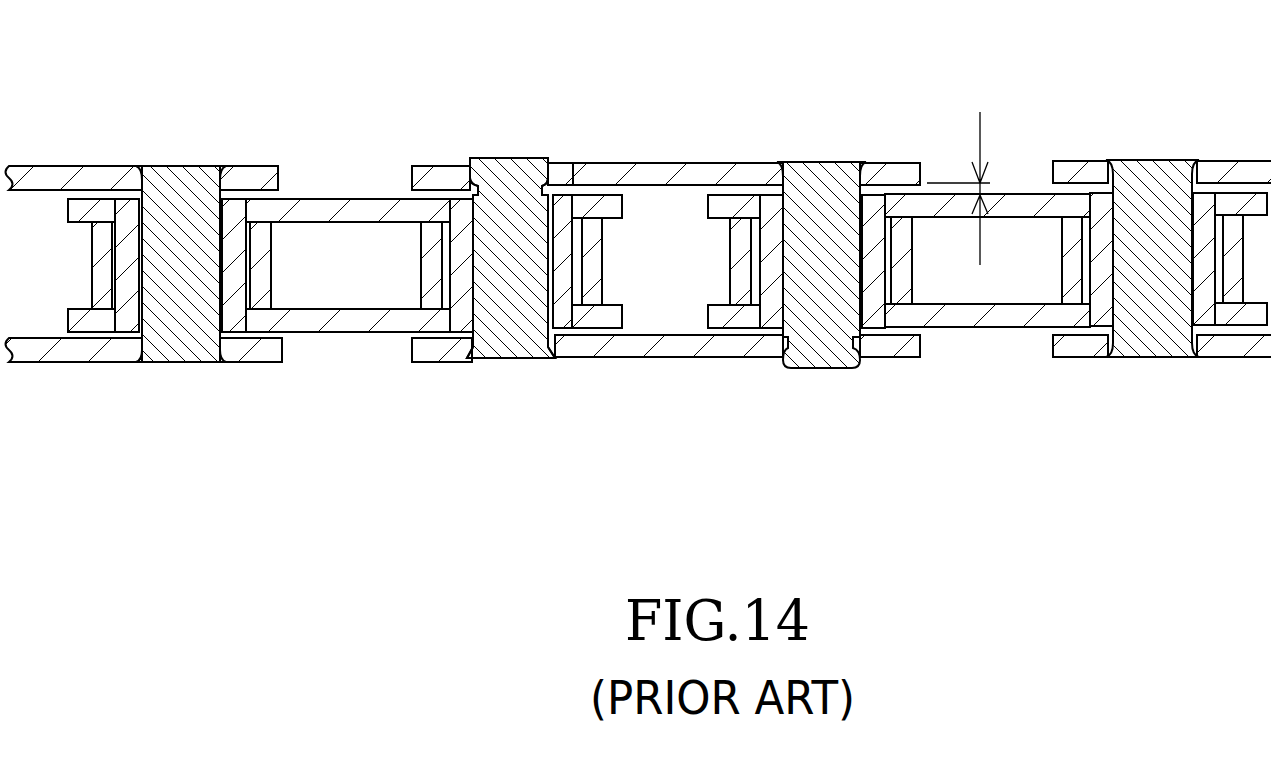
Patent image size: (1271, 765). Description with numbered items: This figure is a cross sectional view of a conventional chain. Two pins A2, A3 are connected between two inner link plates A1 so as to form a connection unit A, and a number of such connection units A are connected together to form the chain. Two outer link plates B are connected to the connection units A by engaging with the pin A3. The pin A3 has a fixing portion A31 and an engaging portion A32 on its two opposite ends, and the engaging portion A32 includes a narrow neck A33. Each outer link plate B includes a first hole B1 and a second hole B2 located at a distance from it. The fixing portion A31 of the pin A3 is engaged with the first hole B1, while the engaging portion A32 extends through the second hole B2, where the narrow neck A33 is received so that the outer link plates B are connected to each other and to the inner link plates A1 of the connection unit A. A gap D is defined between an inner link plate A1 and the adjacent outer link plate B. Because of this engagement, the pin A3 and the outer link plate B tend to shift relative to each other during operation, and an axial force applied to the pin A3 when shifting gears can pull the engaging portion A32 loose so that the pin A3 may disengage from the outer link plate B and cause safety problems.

The connection unit A is at (323, 302).
The inner link plate A1 is at (341, 193).
The pin A2 is at (178, 313).
The pin A3 is at (488, 288).
The fixing portion A31 is at (537, 355).
The engaging portion A32 is at (507, 158).
The narrow neck A33 is at (486, 190).
The outer link plate B is at (698, 170).
The first hole B1 is at (785, 163).
The second hole B2 is at (564, 175).
The gap D is at (958, 171).